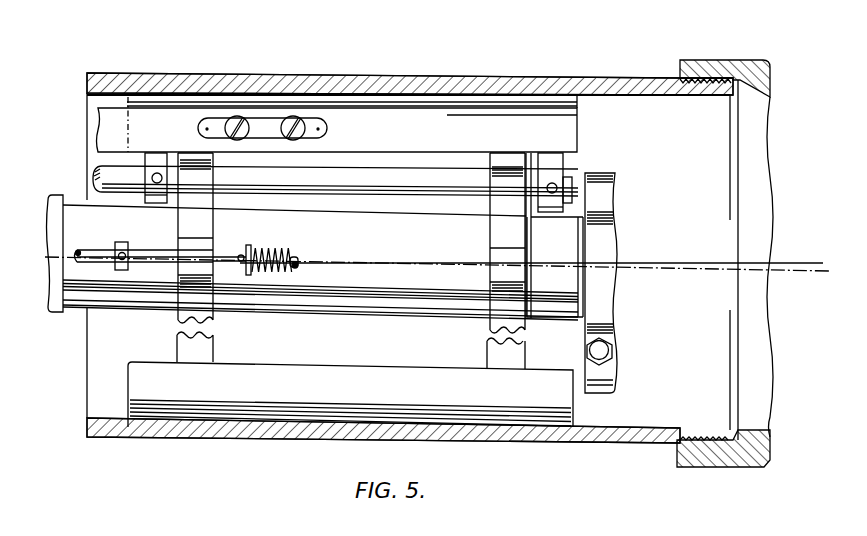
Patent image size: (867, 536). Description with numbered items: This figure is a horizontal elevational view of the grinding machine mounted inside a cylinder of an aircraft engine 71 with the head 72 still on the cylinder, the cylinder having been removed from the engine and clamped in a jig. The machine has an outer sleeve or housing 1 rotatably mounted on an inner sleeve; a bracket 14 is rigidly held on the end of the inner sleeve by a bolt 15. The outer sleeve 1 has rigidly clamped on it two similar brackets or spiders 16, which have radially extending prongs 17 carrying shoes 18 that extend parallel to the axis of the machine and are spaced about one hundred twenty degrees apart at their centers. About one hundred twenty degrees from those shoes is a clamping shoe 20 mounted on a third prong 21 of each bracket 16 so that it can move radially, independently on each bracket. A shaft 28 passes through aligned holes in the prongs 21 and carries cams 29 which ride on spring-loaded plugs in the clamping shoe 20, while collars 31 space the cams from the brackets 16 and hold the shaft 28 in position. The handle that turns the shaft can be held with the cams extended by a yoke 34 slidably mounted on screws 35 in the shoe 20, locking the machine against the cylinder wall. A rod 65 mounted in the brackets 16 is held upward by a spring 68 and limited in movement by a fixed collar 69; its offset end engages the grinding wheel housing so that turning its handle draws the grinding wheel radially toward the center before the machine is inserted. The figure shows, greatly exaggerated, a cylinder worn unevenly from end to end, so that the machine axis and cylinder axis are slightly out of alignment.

The outer sleeve 1 is at (413, 300).
The bracket 14 is at (605, 197).
The bolt 15 is at (606, 352).
The brackets or spiders 16 is at (203, 225).
The radially extending prongs 17 is at (202, 358).
The shoes 18 is at (338, 383).
The clamping shoe 20 is at (370, 115).
The third prong 21 is at (215, 155).
The shaft 28 is at (387, 177).
The cams 29 is at (157, 160).
The collars 31 is at (175, 183).
The yoke 34 is at (273, 112).
The screws 35 is at (236, 118).
The rod 65 is at (147, 250).
The spring 68 is at (292, 257).
The fixed collar 69 is at (117, 241).
The cylinder of an aircraft engine 71 is at (662, 97).
The head 72 is at (733, 60).